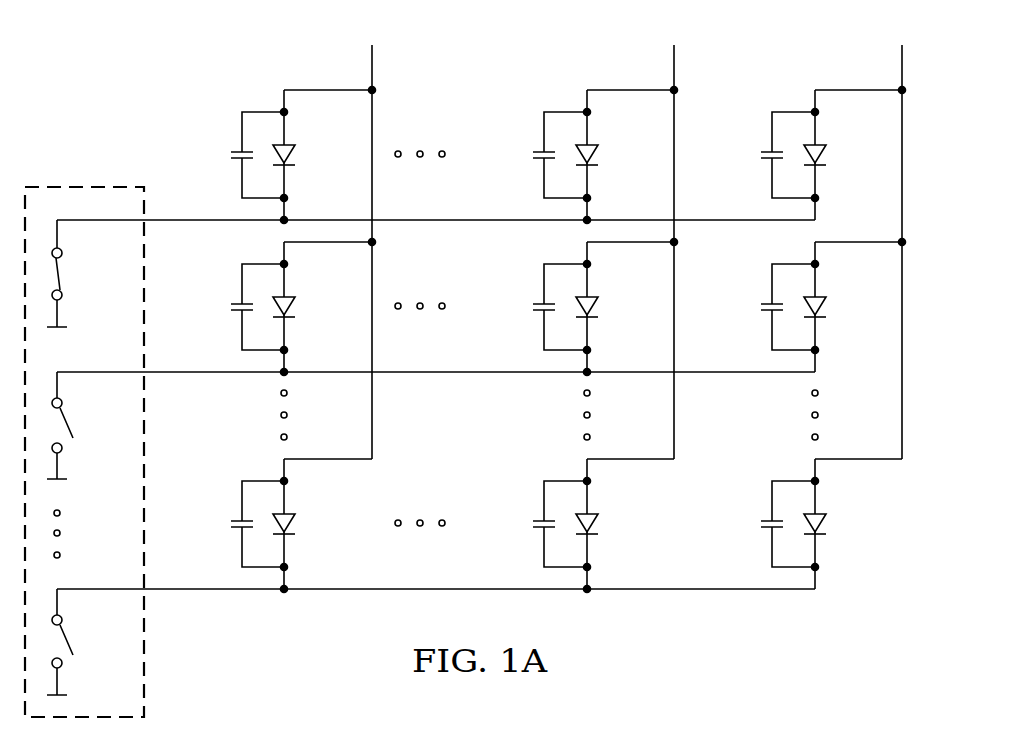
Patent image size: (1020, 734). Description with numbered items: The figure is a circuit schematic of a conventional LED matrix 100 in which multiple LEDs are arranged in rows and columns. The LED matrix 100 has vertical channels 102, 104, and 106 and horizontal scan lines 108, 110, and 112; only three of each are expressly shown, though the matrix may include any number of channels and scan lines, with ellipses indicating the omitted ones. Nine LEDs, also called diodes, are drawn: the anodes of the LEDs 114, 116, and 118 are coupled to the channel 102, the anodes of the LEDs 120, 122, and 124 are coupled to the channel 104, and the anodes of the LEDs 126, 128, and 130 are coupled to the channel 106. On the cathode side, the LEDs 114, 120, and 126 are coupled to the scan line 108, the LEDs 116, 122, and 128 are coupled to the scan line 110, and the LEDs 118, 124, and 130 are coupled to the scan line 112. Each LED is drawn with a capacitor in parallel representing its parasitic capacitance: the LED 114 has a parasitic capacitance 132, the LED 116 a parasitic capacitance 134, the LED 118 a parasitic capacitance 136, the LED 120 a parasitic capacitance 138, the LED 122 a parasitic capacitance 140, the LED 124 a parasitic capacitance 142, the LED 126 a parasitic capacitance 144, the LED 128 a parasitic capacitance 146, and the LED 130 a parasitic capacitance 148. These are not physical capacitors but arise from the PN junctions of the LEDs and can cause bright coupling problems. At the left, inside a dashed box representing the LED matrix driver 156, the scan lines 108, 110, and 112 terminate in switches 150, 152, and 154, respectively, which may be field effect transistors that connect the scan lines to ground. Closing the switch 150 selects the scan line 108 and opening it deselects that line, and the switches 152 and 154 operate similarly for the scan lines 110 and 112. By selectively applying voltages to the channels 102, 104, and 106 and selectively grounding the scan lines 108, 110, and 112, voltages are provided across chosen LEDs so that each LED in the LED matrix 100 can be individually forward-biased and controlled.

The LED matrix 100 is at (170, 61).
The channel 102 is at (902, 66).
The channel 104 is at (674, 66).
The channel 106 is at (372, 66).
The scan line 108 is at (500, 220).
The scan line 110 is at (500, 372).
The scan line 112 is at (500, 589).
The LED 114 is at (823, 157).
The LED 116 is at (823, 309).
The LED 118 is at (823, 526).
The LED 120 is at (595, 157).
The LED 122 is at (595, 309).
The LED 124 is at (595, 526).
The LED 126 is at (292, 157).
The LED 128 is at (292, 309).
The LED 130 is at (292, 526).
The parasitic capacitance 132 is at (762, 152).
The parasitic capacitance 134 is at (762, 304).
The parasitic capacitance 136 is at (762, 521).
The parasitic capacitance 138 is at (534, 152).
The parasitic capacitance 140 is at (534, 304).
The parasitic capacitance 142 is at (534, 521).
The parasitic capacitance 144 is at (232, 152).
The parasitic capacitance 146 is at (232, 304).
The parasitic capacitance 148 is at (232, 521).
The switch 150 is at (62, 276).
The switch 152 is at (68, 423).
The switch 154 is at (68, 640).
The LED matrix driver 156 is at (83, 187).